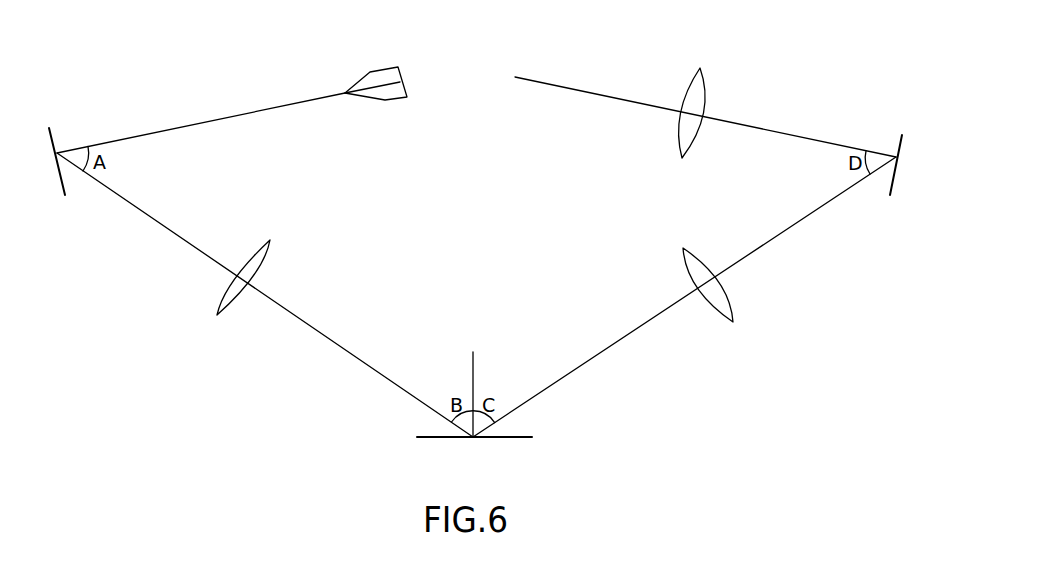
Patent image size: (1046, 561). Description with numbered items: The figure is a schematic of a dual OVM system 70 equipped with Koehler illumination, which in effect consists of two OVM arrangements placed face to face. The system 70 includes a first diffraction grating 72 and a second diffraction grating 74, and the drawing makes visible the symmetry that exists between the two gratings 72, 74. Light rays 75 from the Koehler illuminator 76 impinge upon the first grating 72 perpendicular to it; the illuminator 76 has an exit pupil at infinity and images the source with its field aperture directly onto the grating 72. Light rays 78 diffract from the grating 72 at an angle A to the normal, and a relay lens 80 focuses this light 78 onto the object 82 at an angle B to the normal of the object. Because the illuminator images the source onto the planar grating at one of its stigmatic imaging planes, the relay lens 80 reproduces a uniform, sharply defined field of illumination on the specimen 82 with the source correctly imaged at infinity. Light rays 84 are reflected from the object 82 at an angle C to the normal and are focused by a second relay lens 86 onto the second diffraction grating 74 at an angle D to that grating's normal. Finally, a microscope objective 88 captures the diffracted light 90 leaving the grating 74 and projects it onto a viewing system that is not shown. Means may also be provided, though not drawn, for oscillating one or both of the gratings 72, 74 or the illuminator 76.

The system 70 is at (459, 78).
The first diffraction grating 72 is at (53, 137).
The second diffraction grating 74 is at (897, 137).
The light rays 75 is at (245, 118).
The Koehler illuminator 76 is at (375, 103).
The light rays 78 is at (175, 235).
The relay lens 80 is at (227, 312).
The object 82 is at (517, 438).
The light rays 84 is at (820, 208).
The relay lens 86 is at (735, 312).
The microscope objective 88 is at (707, 98).
The diffracted light 90 is at (783, 135).